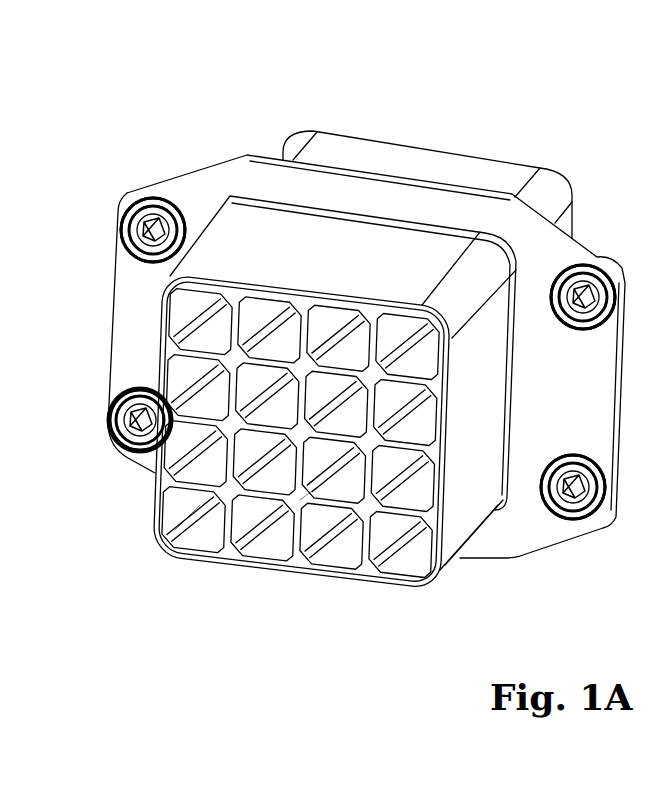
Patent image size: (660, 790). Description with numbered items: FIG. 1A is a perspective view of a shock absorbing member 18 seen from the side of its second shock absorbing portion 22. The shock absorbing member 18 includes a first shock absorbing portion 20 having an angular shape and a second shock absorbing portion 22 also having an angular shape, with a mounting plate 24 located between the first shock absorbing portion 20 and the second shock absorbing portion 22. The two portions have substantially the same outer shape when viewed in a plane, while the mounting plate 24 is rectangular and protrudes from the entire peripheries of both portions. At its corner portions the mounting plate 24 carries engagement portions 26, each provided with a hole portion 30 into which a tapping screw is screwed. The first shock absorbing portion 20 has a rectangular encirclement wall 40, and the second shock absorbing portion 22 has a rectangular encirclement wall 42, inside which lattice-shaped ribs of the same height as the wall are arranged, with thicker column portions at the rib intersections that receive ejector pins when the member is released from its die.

The shock absorbing member 18 is at (607, 120).
The first shock absorbing portion 20 is at (493, 157).
The second shock absorbing portion 22 is at (379, 597).
The mounting plate 24 is at (516, 560).
The engagement portions 26 is at (133, 196).
The hole portions 30 is at (158, 213).
The encirclement wall 40 is at (413, 158).
The encirclement wall 42 is at (457, 530).